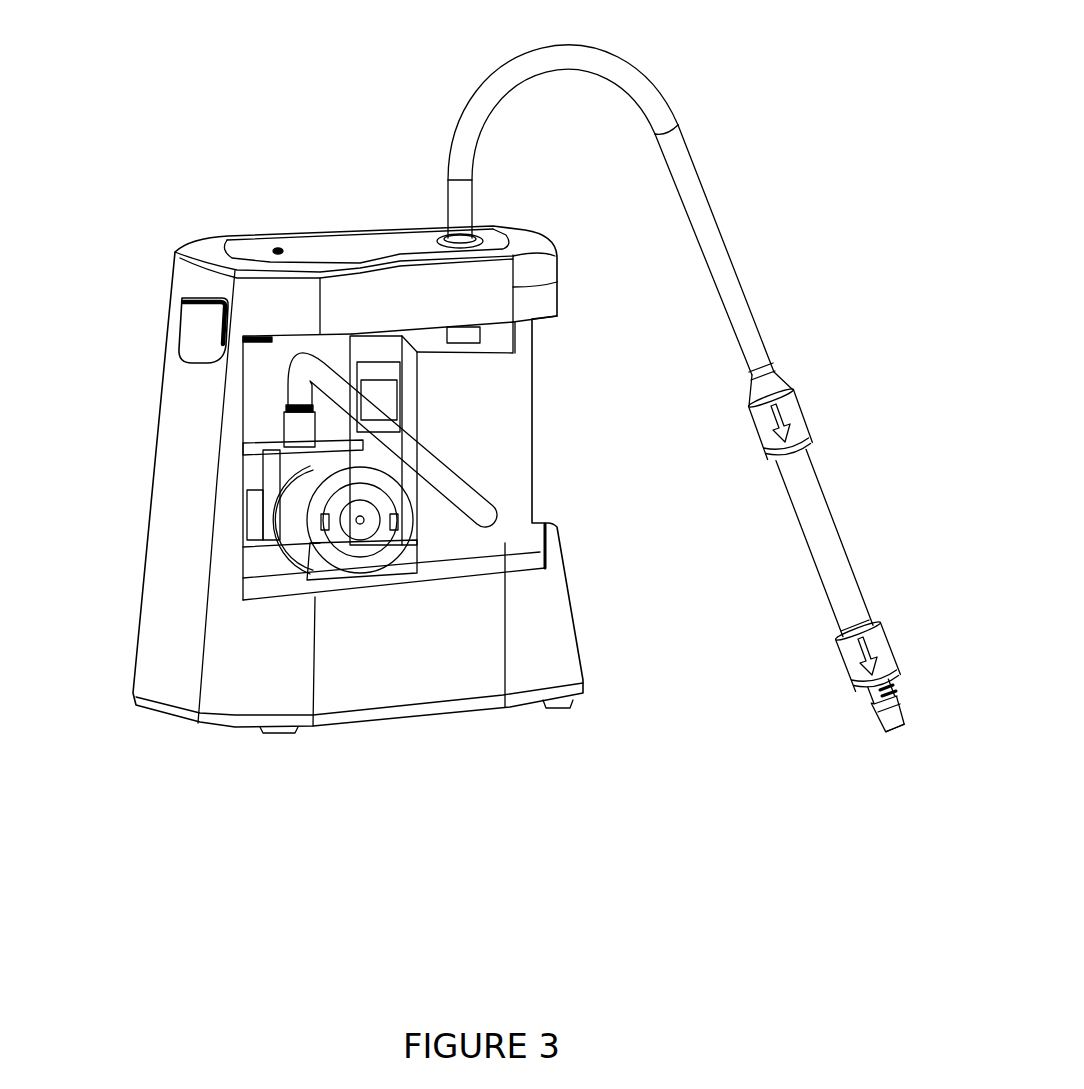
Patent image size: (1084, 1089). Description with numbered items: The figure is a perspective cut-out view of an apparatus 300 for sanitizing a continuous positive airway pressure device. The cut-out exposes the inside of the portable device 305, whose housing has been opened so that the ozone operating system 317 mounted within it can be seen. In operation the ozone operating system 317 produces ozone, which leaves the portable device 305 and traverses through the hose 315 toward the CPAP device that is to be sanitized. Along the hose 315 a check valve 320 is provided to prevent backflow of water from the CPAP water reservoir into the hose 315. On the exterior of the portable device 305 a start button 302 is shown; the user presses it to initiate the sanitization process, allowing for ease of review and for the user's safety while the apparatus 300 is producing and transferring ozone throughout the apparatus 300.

The apparatus 300 is at (422, 772).
The portable device 305 is at (157, 268).
The start button 302 is at (190, 330).
The ozone operating system 317 is at (268, 468).
The hose 315 is at (741, 234).
The check valve 320 is at (827, 464).